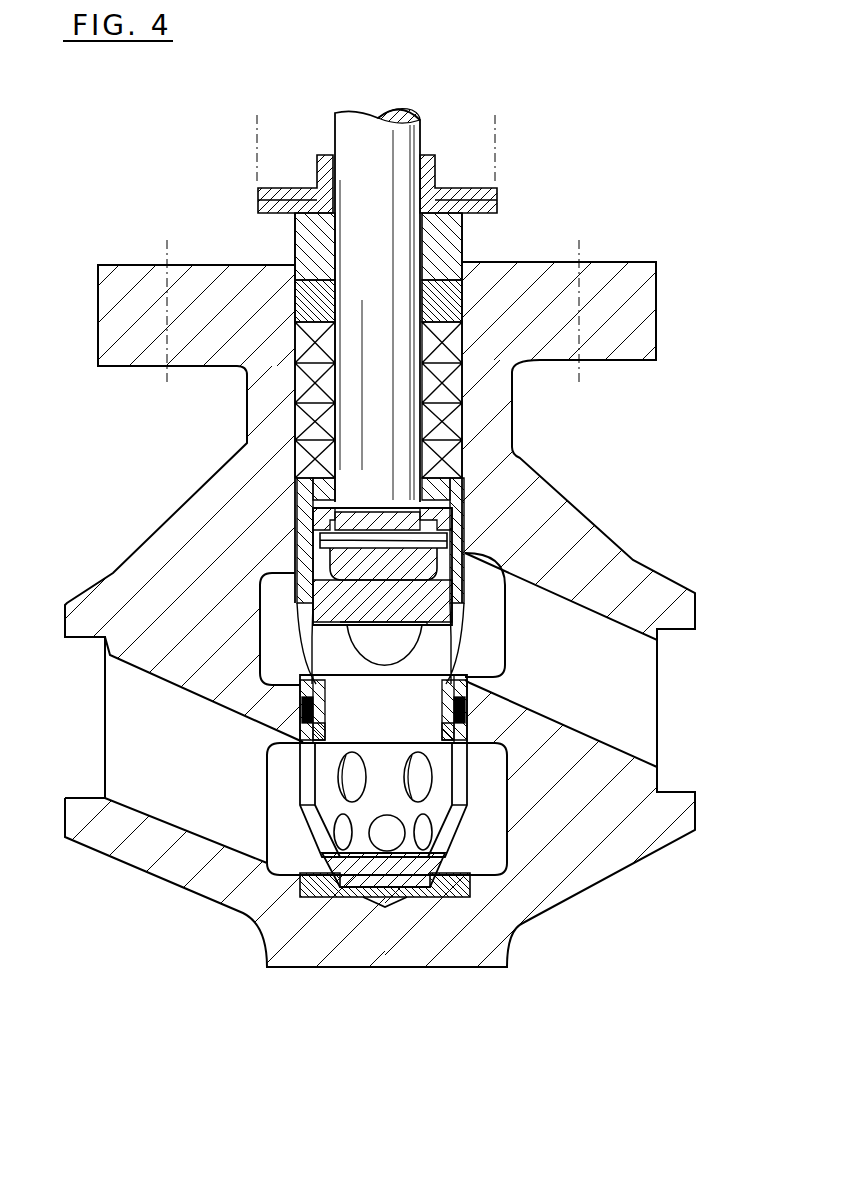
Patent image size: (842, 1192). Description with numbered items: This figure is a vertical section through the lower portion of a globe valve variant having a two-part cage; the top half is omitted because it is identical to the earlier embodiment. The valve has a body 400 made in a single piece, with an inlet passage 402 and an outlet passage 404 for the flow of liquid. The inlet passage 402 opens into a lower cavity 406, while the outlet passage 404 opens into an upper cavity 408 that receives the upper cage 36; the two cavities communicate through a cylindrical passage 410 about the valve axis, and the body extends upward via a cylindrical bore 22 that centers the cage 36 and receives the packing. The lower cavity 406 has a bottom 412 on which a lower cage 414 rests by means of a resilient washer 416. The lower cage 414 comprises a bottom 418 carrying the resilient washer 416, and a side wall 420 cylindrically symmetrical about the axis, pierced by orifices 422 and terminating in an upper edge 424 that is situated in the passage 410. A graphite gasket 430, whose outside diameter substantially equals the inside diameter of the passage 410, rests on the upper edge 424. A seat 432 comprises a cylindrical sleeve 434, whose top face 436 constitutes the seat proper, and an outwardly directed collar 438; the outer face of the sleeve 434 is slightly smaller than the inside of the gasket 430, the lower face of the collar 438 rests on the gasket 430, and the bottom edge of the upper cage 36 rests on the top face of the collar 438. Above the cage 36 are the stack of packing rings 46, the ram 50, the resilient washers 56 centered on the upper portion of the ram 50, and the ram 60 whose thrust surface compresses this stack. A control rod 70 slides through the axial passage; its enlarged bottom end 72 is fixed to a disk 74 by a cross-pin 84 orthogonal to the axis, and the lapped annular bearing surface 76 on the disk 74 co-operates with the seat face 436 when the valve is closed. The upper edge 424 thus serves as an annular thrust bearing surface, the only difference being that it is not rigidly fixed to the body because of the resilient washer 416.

The cylindrical bore 22 is at (455, 418).
The cage 36 is at (467, 527).
The packing rings 46 is at (455, 383).
The ram 50 is at (465, 240).
The resilient washers 56 is at (485, 187).
The ram 60 is at (100, 297).
The control rod 70 is at (350, 125).
The bottom end of the rod 72 is at (380, 513).
The disk 74 is at (325, 542).
The lapped annular bearing surface 76 is at (258, 575).
The cross-pin 84 is at (395, 528).
The body 400 is at (555, 517).
The inlet passage 402 is at (163, 797).
The outlet passage 404 is at (630, 677).
The lower cavity 406 is at (245, 862).
The upper cavity 408 is at (493, 603).
The cylindrical passage 410 is at (467, 680).
The bottom of the lower cavity 412 is at (405, 972).
The lower cage 414 is at (461, 815).
The resilient washer 416 is at (470, 900).
The bottom of the lower cage 418 is at (447, 860).
The side wall 420 is at (465, 803).
The orifices 422 is at (420, 777).
The upper edge 424 is at (300, 748).
The gasket 430 is at (470, 706).
The seat 432 is at (167, 713).
The cylindrical sleeve 434 is at (305, 735).
The top face 436 is at (316, 672).
The collar 438 is at (305, 706).